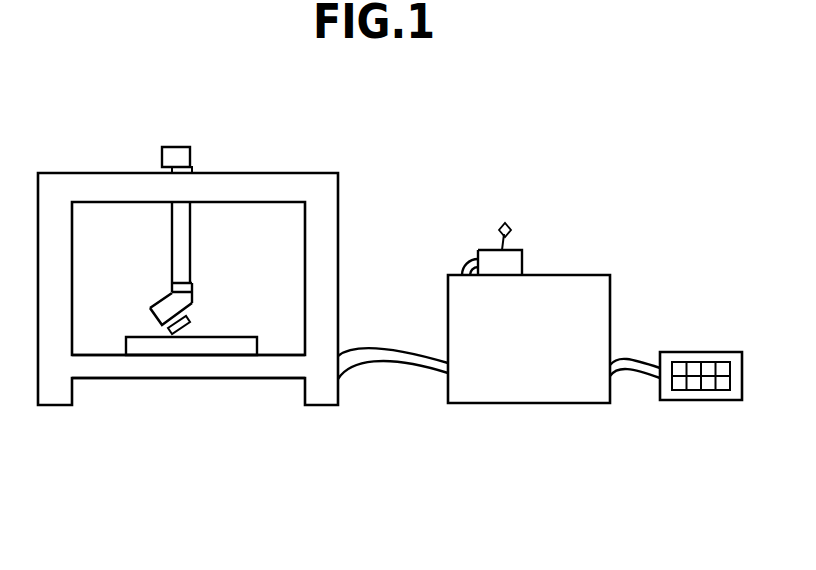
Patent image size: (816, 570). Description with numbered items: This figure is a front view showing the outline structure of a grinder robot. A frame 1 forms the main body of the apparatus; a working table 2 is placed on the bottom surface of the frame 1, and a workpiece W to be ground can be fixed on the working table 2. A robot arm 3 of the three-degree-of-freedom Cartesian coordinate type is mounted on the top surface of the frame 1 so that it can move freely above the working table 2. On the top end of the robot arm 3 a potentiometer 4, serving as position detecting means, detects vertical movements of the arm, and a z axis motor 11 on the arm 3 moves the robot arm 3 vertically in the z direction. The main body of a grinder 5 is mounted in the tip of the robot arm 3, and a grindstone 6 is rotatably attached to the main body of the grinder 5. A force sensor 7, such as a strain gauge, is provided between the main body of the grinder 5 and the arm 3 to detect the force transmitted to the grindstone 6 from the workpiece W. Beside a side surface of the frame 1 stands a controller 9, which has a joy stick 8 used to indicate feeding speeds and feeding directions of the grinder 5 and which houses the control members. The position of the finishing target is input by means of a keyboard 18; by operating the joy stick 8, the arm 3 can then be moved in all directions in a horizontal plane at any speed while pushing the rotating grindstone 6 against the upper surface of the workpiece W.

The frame 1 is at (307, 173).
The working table 2 is at (233, 372).
The robot arm 3 is at (200, 233).
The potentiometer 4 is at (193, 172).
The grinder 5 is at (152, 300).
The grindstone 6 is at (193, 322).
The force sensor 7 is at (200, 270).
The joy stick 8 is at (522, 253).
The controller 9 is at (610, 292).
The z axis motor 11 is at (172, 147).
The keyboard 18 is at (690, 352).
The workpiece W is at (163, 348).